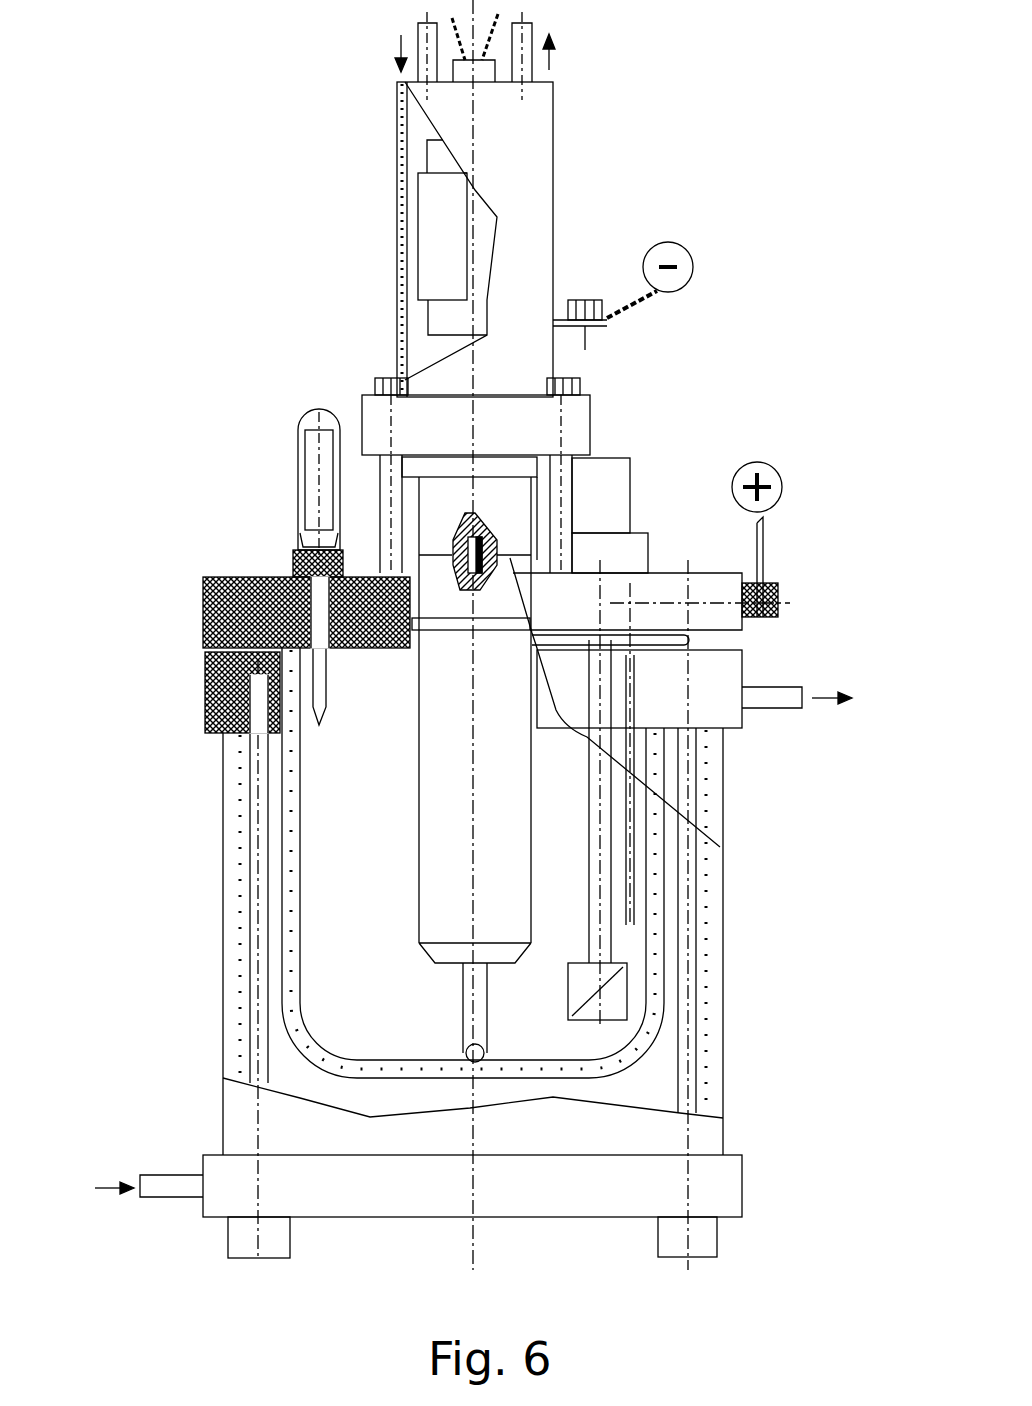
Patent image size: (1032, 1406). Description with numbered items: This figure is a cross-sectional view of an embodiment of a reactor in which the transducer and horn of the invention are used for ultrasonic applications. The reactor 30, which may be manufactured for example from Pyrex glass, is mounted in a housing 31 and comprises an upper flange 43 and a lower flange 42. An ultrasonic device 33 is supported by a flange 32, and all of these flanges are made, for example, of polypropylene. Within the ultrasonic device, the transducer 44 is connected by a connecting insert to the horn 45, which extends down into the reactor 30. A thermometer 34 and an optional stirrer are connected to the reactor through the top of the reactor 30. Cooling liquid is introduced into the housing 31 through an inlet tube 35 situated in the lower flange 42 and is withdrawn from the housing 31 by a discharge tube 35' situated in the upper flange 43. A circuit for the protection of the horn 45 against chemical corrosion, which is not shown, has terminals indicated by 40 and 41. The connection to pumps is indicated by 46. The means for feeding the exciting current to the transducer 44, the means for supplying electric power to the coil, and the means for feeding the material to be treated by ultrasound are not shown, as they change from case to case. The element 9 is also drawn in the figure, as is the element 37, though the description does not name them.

The stopper / sealing plug 9 is at (497, 543).
The reactor 30 is at (573, 1092).
The housing 31 is at (690, 765).
The flange 32 is at (567, 430).
The ultrasonic device 33 is at (445, 500).
The thermometer 34 is at (297, 462).
The inlet tube 35 is at (149, 1235).
The discharge tube 35' is at (810, 664).
The sensor block 37 is at (620, 1000).
The terminal 40 is at (765, 545).
The terminal 41 is at (640, 307).
The lower flange 42 is at (726, 1190).
The upper flange 43 is at (214, 726).
The transducer 44 is at (522, 516).
The horn 45 is at (450, 885).
The connection to pumps 46 is at (462, 1015).